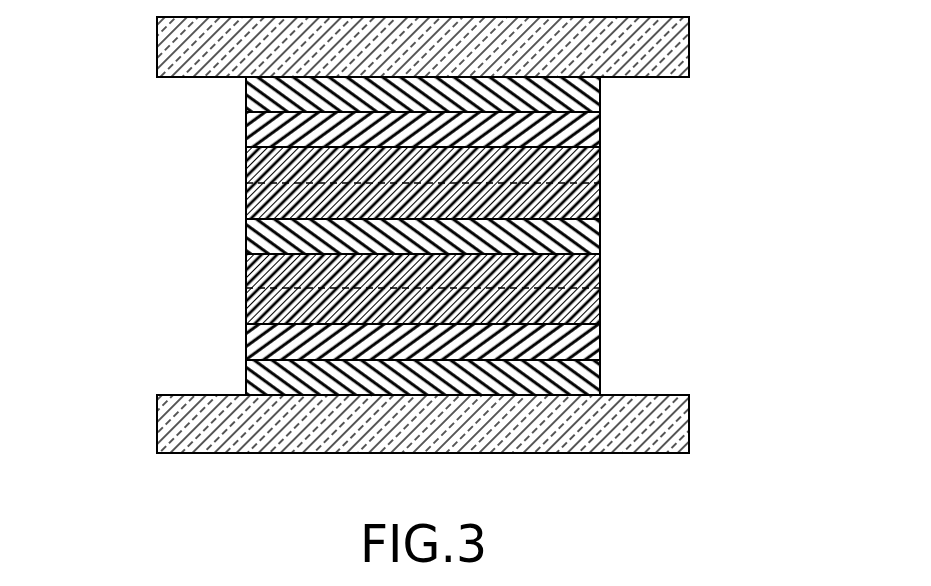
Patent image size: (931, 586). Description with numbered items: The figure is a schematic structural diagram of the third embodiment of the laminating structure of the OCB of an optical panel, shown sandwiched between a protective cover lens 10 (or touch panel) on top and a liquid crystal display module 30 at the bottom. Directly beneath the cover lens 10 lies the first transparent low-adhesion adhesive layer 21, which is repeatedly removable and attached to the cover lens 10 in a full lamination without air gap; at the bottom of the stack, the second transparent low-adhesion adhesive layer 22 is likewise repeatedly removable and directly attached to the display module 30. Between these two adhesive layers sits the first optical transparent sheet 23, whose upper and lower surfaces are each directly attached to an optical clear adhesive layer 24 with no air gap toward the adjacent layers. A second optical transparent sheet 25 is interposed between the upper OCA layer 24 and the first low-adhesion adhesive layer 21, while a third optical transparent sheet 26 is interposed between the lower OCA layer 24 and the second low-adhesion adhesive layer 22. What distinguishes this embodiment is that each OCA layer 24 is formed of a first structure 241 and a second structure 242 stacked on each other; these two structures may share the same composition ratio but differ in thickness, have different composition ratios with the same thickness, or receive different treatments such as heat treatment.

The protective cover lens 10 is at (685, 43).
The liquid crystal display module 30 is at (682, 425).
The first transparent low-adhesion adhesive layer 21 is at (600, 87).
The second transparent low-adhesion adhesive layer 22 is at (600, 370).
The first optical transparent sheet 23 is at (600, 229).
The optical clear adhesive layer 24 is at (231, 170).
The first structure 241 is at (600, 192).
The second structure 242 is at (600, 157).
The second optical transparent sheet 25 is at (600, 122).
The third optical transparent sheet 26 is at (600, 335).